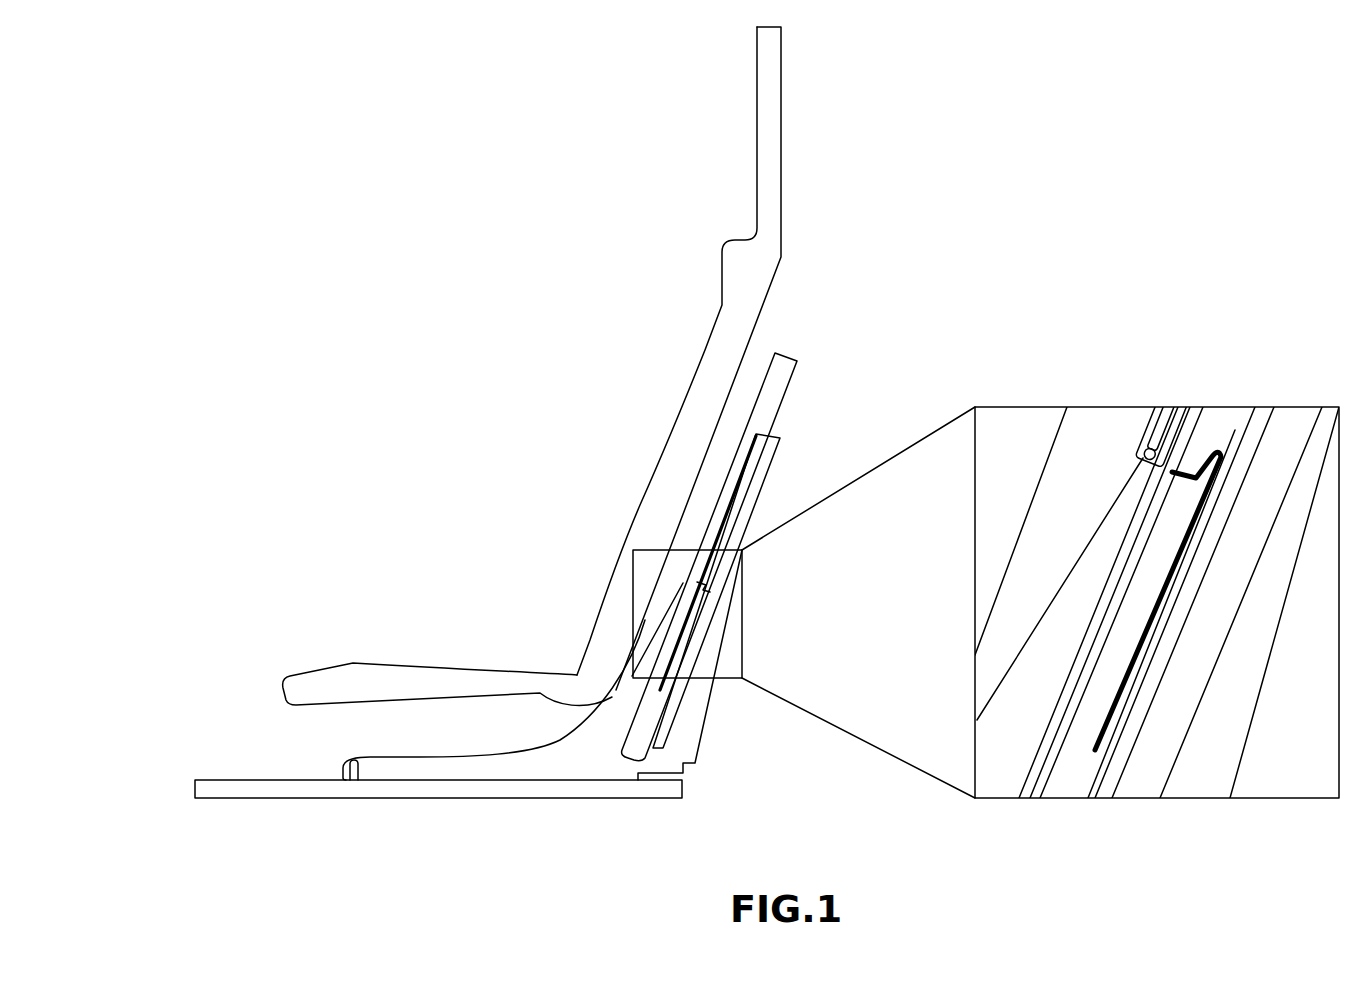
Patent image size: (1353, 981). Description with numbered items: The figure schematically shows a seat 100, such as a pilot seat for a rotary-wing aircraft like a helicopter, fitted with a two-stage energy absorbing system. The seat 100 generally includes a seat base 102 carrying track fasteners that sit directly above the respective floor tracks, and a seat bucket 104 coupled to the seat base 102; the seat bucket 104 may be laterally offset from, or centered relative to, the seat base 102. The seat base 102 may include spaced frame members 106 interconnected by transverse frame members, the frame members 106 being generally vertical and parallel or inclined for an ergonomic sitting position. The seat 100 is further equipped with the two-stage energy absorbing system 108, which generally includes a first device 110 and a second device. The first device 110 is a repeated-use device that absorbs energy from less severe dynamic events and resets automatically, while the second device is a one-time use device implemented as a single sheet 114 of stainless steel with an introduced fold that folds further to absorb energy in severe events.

The seat 100 is at (708, 221).
The seat base 102 is at (690, 727).
The seat bucket 104 is at (692, 388).
The frame member 106 is at (786, 348).
The two-stage energy absorbing system 108 is at (716, 591).
The first device 110 is at (657, 629).
The single sheet 114 is at (708, 563).